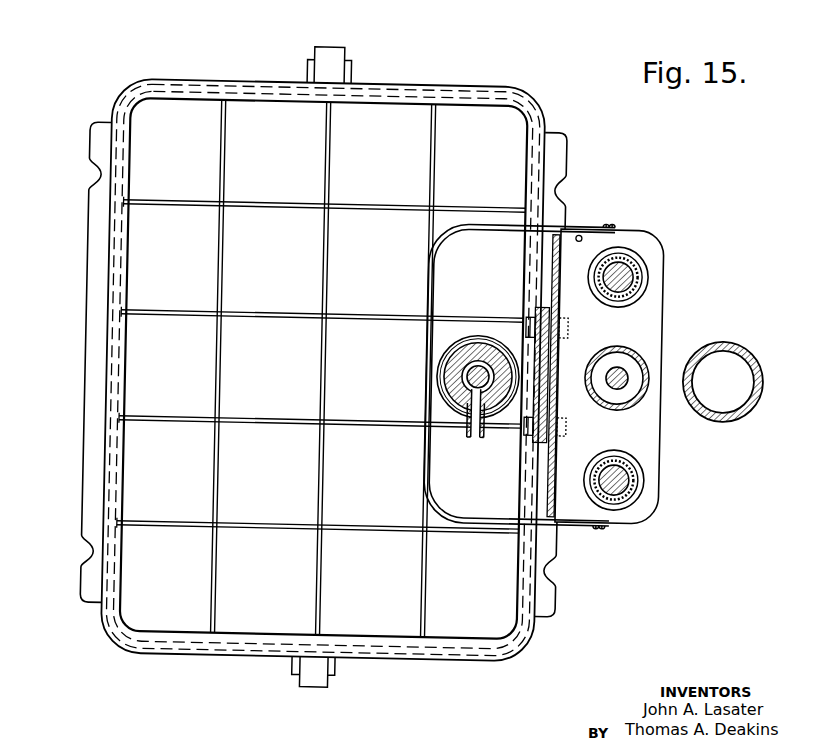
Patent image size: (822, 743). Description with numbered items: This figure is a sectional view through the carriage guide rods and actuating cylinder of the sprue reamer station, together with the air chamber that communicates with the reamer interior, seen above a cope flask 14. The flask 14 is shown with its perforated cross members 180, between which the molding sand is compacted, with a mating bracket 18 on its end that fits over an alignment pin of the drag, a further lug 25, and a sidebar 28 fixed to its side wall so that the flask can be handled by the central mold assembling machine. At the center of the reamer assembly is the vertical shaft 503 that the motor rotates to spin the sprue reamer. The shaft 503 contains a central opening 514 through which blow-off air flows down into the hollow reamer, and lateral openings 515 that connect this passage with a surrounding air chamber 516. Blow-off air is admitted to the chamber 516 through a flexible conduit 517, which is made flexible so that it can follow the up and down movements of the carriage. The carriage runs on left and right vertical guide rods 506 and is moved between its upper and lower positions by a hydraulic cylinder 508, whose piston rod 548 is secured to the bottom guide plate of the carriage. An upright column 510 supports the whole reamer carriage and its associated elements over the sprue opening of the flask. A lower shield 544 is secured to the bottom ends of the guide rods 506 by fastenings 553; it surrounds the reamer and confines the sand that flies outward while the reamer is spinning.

The cope flask 14 is at (206, 82).
The mating bracket 18 is at (346, 72).
The bottom mounting lug 25 is at (318, 690).
The sidebar 28 is at (85, 345).
The perforated cross member 180 is at (272, 314).
The lower shield 544 is at (485, 220).
The fastening 553 is at (605, 220).
The vertical guide rod 506 is at (635, 266).
The hydraulic cylinder 508 is at (648, 355).
The upright column 510 is at (762, 363).
The piston rod 548 is at (626, 384).
The vertical shaft 503 is at (482, 357).
The central opening 514 is at (467, 335).
The lateral opening 515 is at (466, 387).
The air chamber 516 is at (452, 360).
The flexible conduit 517 is at (476, 437).